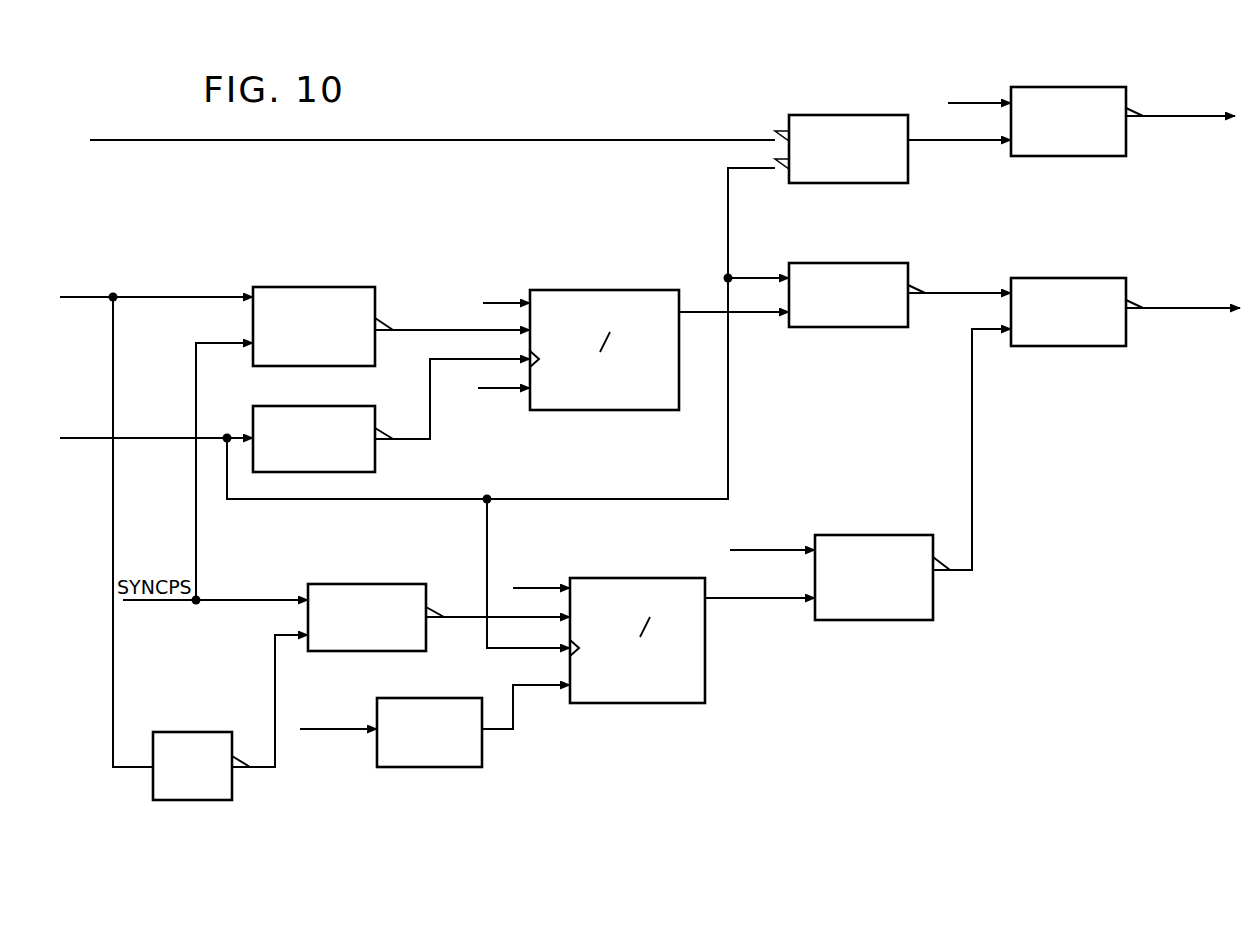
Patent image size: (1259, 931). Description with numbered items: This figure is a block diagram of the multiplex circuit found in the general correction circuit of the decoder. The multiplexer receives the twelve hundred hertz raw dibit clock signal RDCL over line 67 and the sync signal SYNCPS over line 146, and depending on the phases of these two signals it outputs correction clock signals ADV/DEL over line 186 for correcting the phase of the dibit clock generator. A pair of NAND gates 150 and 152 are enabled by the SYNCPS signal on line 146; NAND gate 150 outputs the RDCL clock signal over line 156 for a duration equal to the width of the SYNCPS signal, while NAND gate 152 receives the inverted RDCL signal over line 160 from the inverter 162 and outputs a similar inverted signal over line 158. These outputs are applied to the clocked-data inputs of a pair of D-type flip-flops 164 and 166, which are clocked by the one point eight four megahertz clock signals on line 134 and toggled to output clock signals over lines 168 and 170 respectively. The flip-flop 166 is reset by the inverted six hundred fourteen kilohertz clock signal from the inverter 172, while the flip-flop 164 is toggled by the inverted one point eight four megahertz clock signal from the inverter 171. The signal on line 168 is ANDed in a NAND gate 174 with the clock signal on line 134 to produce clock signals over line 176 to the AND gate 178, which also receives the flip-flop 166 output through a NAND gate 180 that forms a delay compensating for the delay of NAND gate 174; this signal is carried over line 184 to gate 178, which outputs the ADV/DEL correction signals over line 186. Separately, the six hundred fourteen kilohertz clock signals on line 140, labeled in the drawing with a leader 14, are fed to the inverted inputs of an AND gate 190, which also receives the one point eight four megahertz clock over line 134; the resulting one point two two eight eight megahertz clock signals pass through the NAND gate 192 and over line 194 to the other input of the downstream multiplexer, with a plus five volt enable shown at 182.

The 614 KC clock line 14 is at (195, 140).
The line 67 is at (172, 296).
The line 134 is at (130, 438).
The line 140 is at (305, 730).
The line 146 is at (197, 543).
The NAND gate 150 is at (330, 287).
The NAND gate 152 is at (350, 584).
The line 156 is at (410, 330).
The line 158 is at (462, 612).
The line 160 is at (275, 680).
The inverter 162 is at (225, 800).
The D-type flip-flop 164 is at (615, 290).
The D-type flip-flop 166 is at (620, 578).
The line 168 is at (745, 312).
The line 170 is at (730, 598).
The inverter 171 is at (370, 462).
The inverter 172 is at (460, 767).
The NAND gate 174 is at (860, 327).
The line 176 is at (946, 275).
The AND gate 178 is at (1070, 278).
The NAND gate 180 is at (865, 535).
The +5V input line 182 is at (786, 554).
The line 184 is at (972, 448).
The line 186 is at (1165, 308).
The AND gate 190 is at (855, 183).
The NAND gate 192 is at (1060, 156).
The line 194 is at (1160, 116).